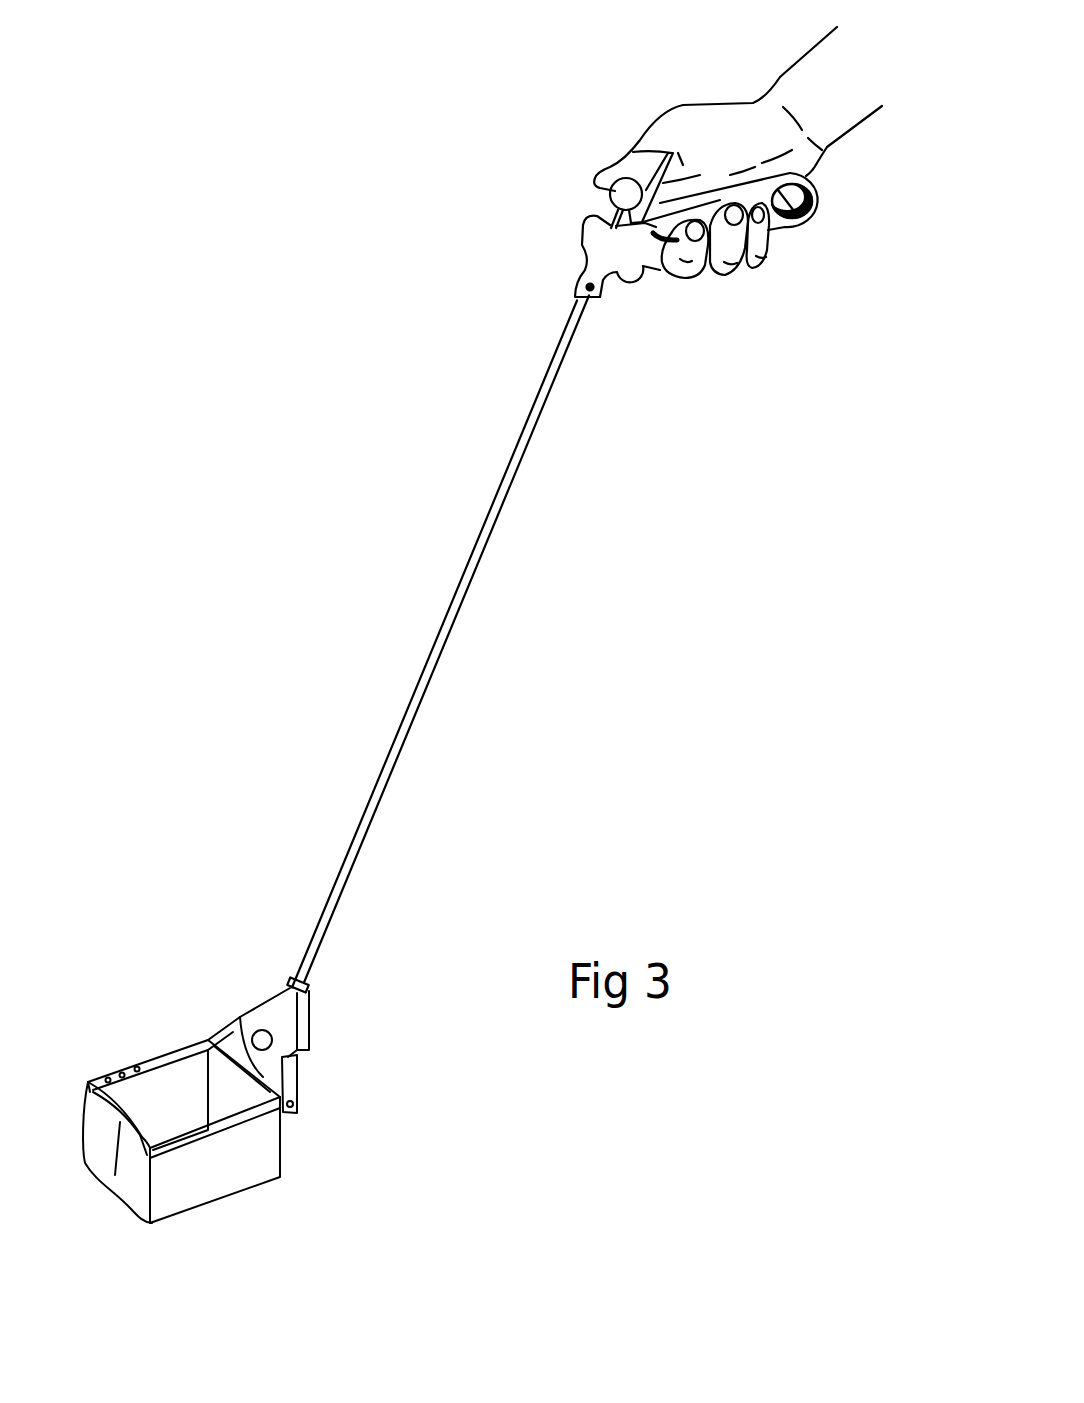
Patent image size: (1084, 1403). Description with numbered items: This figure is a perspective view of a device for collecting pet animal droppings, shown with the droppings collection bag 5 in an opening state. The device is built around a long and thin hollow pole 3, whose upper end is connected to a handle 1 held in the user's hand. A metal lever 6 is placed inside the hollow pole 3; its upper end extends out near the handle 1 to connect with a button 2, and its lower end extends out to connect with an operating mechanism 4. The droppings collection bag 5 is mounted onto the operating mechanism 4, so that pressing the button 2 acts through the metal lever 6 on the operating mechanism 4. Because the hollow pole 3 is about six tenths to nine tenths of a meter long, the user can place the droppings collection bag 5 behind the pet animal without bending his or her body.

The handle 1 is at (803, 217).
The button 2 is at (622, 195).
The hollow pole 3 is at (438, 650).
The operating mechanism 4 is at (303, 1077).
The droppings collection bag 5 is at (240, 1195).
The metal lever 6 is at (615, 207).